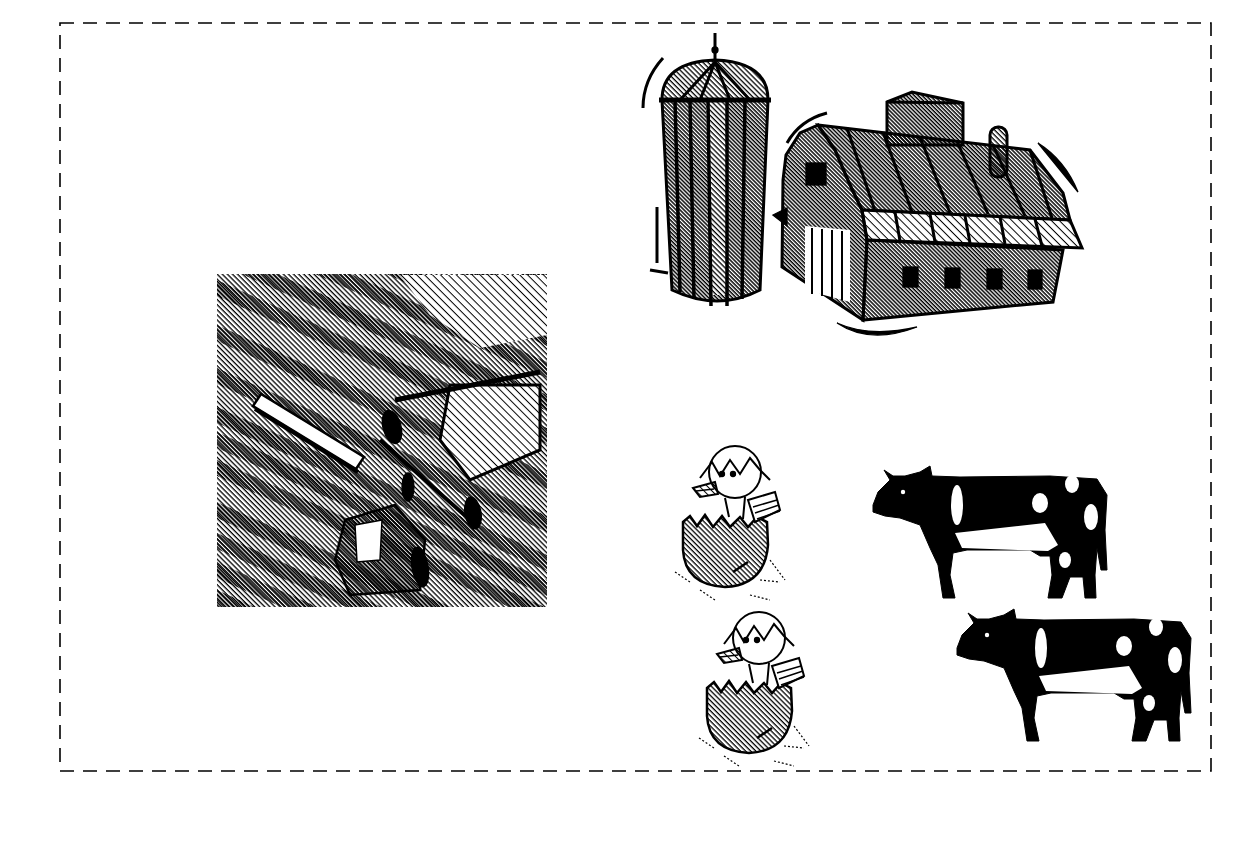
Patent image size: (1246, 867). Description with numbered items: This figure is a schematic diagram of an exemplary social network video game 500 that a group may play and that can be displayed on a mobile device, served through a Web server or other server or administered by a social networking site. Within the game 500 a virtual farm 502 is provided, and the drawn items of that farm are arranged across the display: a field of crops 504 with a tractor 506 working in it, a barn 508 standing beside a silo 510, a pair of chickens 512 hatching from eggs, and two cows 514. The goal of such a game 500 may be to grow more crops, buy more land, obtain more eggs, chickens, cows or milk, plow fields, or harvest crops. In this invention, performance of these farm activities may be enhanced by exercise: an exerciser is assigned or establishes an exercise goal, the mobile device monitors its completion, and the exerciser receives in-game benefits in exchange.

The video game 500 is at (256, 121).
The virtual farm 502 is at (330, 771).
The crops 504 is at (217, 328).
The tractor 506 is at (342, 597).
The barn 508 is at (963, 125).
The silo 510 is at (675, 285).
The chickens 512 is at (713, 697).
The cows 514 is at (940, 557).